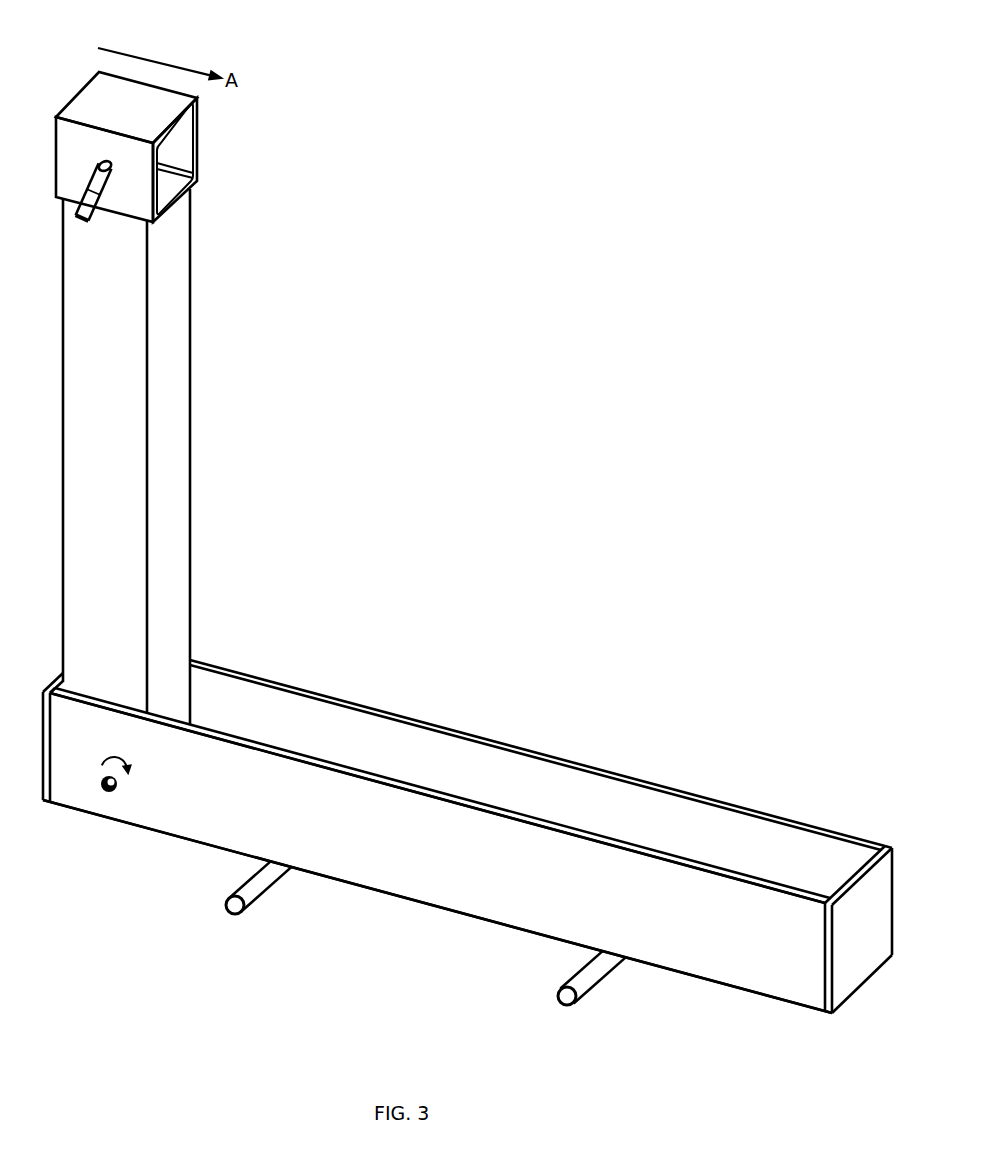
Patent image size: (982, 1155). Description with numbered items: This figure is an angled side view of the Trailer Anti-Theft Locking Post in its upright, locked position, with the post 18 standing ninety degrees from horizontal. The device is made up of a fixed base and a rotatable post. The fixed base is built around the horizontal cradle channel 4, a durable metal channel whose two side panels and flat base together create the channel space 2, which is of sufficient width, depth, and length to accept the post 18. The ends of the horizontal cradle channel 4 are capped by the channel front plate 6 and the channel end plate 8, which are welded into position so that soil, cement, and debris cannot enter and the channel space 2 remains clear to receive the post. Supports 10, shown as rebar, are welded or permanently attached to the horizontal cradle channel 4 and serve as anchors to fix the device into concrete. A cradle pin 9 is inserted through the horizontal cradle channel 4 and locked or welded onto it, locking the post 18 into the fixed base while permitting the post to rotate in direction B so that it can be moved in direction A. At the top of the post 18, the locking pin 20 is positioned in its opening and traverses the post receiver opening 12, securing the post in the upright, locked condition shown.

The channel space 2 is at (424, 748).
The horizontal cradle channel 4 is at (424, 887).
The channel front plate 6 is at (849, 988).
The channel end plate 8 is at (47, 803).
The cradle pin 9 is at (108, 792).
The supports 10 is at (255, 893).
The post receiver opening 12 is at (182, 154).
The post 18 is at (178, 312).
The locking pin 20 is at (77, 220).